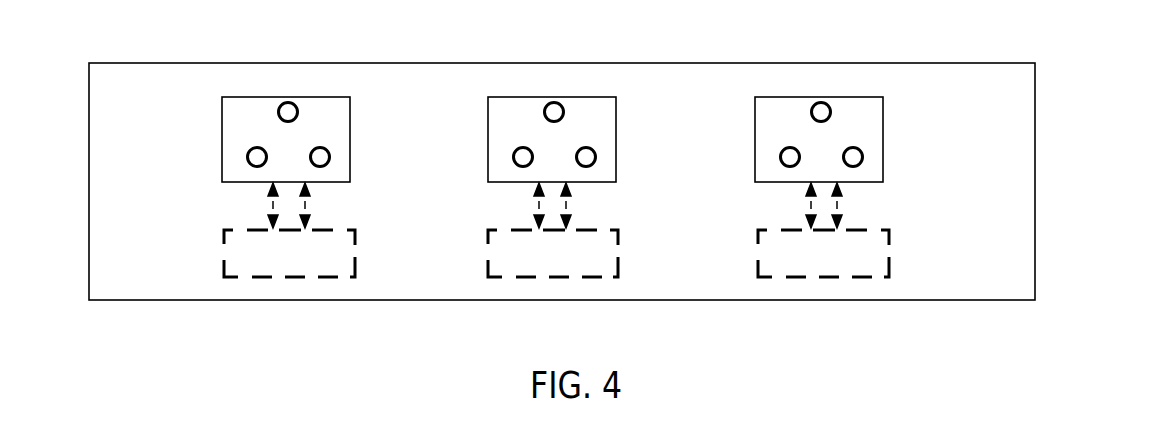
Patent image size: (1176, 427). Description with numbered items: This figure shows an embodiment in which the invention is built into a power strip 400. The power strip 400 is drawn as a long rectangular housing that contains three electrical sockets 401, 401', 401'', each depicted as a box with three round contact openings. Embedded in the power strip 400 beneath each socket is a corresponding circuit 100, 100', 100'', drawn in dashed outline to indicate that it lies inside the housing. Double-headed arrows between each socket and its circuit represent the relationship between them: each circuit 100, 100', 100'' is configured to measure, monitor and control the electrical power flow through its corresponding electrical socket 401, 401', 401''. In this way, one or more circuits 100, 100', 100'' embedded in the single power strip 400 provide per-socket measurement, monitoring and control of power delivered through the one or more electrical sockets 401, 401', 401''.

The power strip 400 is at (1035, 192).
The electrical socket 401 is at (300, 108).
The electrical socket 401' is at (569, 108).
The electrical socket 401'' is at (844, 108).
The circuit 100 is at (289, 253).
The circuit 100' is at (553, 253).
The circuit 100'' is at (823, 253).